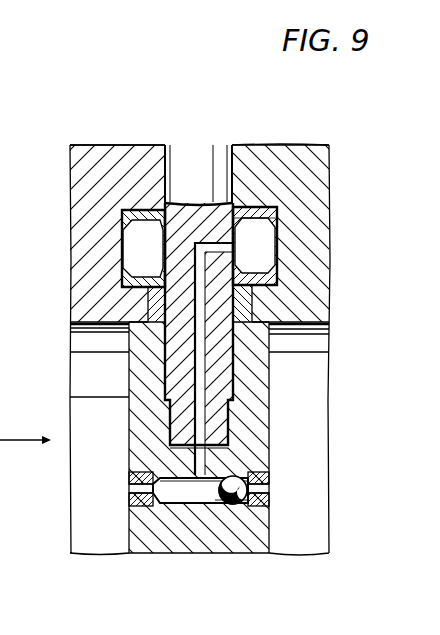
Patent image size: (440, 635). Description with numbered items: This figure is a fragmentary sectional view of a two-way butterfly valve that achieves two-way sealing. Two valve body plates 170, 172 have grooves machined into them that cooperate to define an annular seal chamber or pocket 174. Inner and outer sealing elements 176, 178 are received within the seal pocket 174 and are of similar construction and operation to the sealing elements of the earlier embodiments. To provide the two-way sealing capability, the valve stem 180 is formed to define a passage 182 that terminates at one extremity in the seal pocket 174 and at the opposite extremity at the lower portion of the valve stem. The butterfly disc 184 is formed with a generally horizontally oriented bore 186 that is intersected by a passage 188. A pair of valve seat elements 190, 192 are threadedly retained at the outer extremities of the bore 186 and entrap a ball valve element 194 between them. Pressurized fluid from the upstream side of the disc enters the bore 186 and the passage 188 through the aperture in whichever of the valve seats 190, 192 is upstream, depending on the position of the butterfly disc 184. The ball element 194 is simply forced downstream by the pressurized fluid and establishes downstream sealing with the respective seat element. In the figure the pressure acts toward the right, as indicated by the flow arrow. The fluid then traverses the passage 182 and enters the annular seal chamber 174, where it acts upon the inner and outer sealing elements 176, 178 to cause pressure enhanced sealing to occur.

The valve body plate 170 is at (316, 290).
The valve body plate 172 is at (83, 293).
The annular seal chamber or pocket 174 is at (262, 250).
The inner sealing element 176 is at (285, 325).
The outer sealing element 178 is at (262, 215).
The valve stem 180 is at (200, 157).
The passage 182 is at (200, 360).
The butterfly disc 184 is at (257, 455).
The bore 186 is at (193, 503).
The passage 188 is at (192, 458).
The valve seat element 190 is at (270, 503).
The valve seat element 192 is at (135, 496).
The ball valve element 194 is at (228, 503).